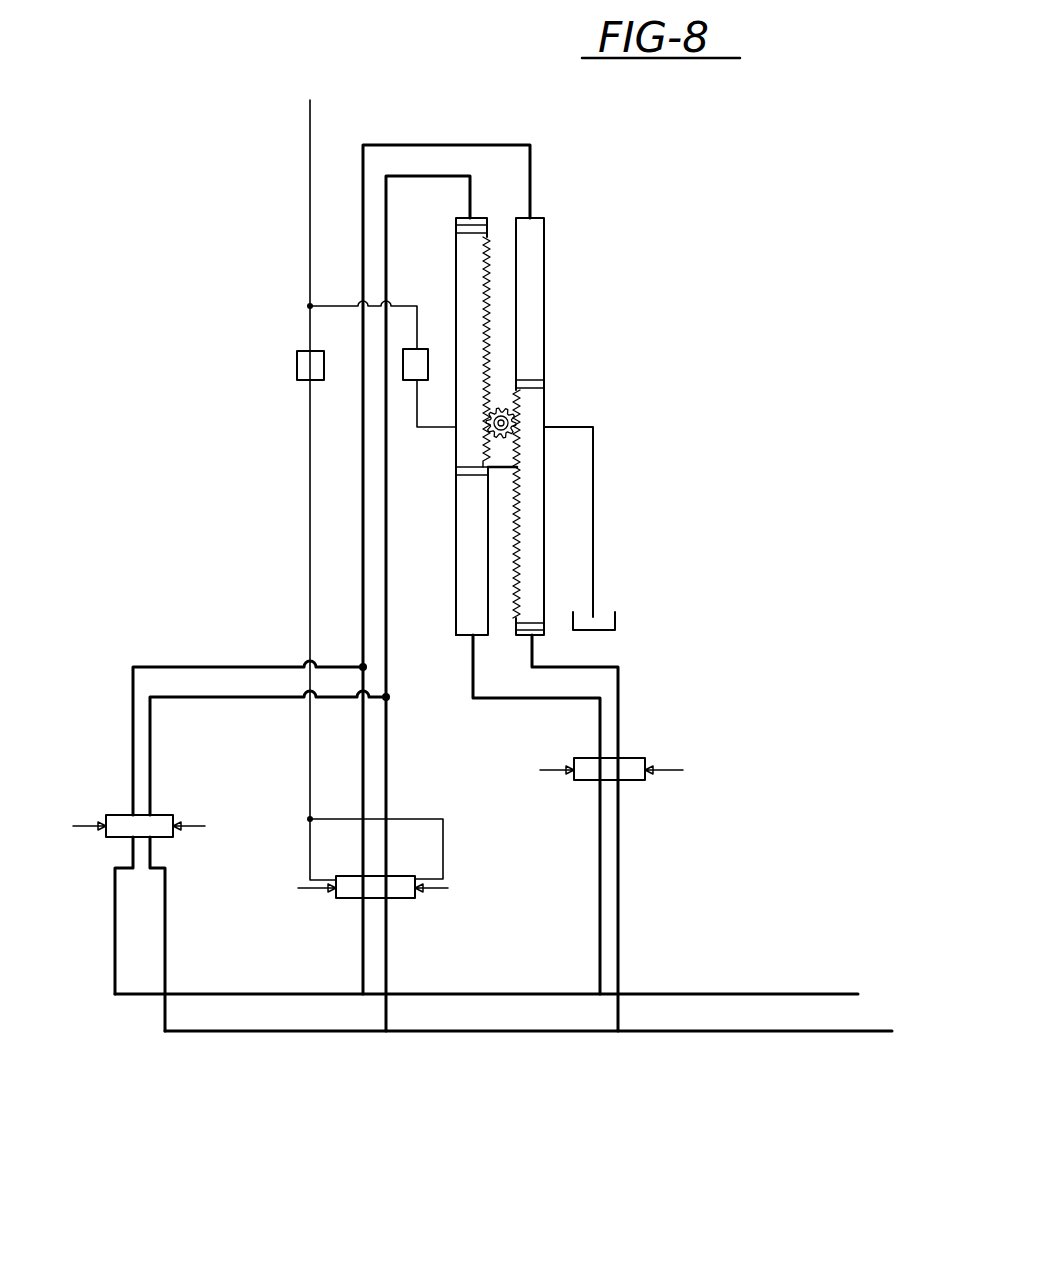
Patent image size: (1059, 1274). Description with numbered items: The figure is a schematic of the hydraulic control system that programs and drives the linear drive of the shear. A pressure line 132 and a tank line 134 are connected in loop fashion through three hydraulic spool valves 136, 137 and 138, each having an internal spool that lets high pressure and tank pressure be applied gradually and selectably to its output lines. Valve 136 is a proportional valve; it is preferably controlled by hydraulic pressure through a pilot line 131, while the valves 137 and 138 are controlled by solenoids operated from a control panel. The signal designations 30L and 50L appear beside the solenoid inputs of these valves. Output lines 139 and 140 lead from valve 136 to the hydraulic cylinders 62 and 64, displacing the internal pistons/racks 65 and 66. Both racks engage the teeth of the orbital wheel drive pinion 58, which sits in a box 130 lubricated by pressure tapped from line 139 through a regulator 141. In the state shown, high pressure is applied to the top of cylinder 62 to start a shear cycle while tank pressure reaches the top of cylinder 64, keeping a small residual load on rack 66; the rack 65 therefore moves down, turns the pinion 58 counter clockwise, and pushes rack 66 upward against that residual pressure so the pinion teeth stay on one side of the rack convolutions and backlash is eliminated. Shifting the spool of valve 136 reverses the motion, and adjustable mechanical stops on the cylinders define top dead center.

The pinion 58 is at (505, 403).
The hydraulic cylinder 62 is at (453, 268).
The hydraulic cylinder 64 is at (545, 287).
The piston/rack 65 is at (490, 348).
The piston/rack 66 is at (520, 520).
The box 130 is at (498, 468).
The pilot line 131 is at (310, 282).
The pressure line 132 is at (757, 994).
The tank line 134 is at (797, 1033).
The proportional valve 136 is at (415, 898).
The hydraulic spool valve 137 is at (106, 815).
The hydraulic spool valve 138 is at (645, 780).
The output line 139 is at (423, 143).
The output line 140 is at (458, 172).
The regulator 141 is at (403, 363).
The control signal 30L is at (165, 826).
The control signal 50L is at (463, 832).